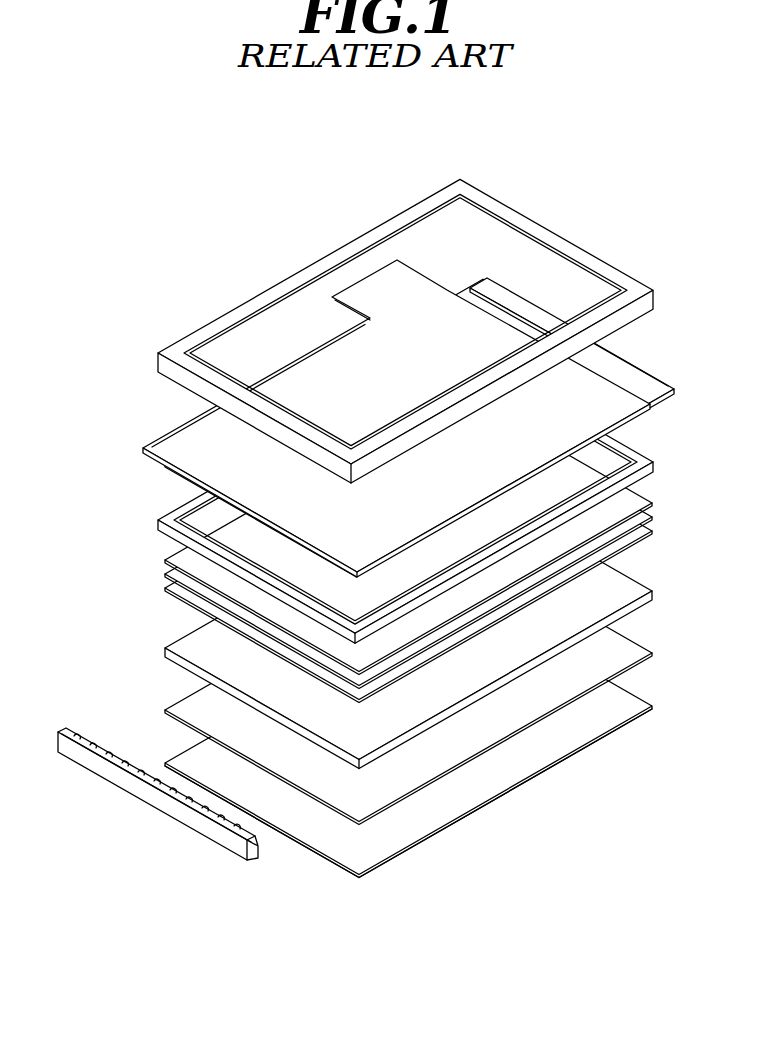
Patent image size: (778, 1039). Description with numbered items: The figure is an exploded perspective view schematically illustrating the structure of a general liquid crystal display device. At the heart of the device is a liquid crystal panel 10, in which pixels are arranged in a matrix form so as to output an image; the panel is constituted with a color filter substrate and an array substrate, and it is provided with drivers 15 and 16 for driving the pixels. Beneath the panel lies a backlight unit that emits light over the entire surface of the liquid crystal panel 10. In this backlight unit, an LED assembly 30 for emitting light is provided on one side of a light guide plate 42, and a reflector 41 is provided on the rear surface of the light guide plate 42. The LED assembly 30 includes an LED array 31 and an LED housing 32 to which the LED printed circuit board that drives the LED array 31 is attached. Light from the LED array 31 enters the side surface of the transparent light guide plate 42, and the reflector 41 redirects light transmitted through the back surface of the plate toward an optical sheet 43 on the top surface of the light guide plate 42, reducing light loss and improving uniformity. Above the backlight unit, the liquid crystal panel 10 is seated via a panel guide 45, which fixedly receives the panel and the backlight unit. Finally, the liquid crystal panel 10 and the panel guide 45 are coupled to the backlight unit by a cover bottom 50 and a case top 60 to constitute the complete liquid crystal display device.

The liquid crystal panel 10 is at (367, 418).
The driver 15 is at (156, 446).
The driver 16 is at (640, 376).
The LED assembly 30 is at (143, 794).
The LED array 31 is at (98, 755).
The LED housing 32 is at (135, 790).
The reflector 41 is at (183, 704).
The light guide plate 42 is at (181, 648).
The optical sheet 43 is at (159, 573).
The panel guide 45 is at (162, 529).
The cover bottom 50 is at (184, 757).
The case top 60 is at (165, 365).